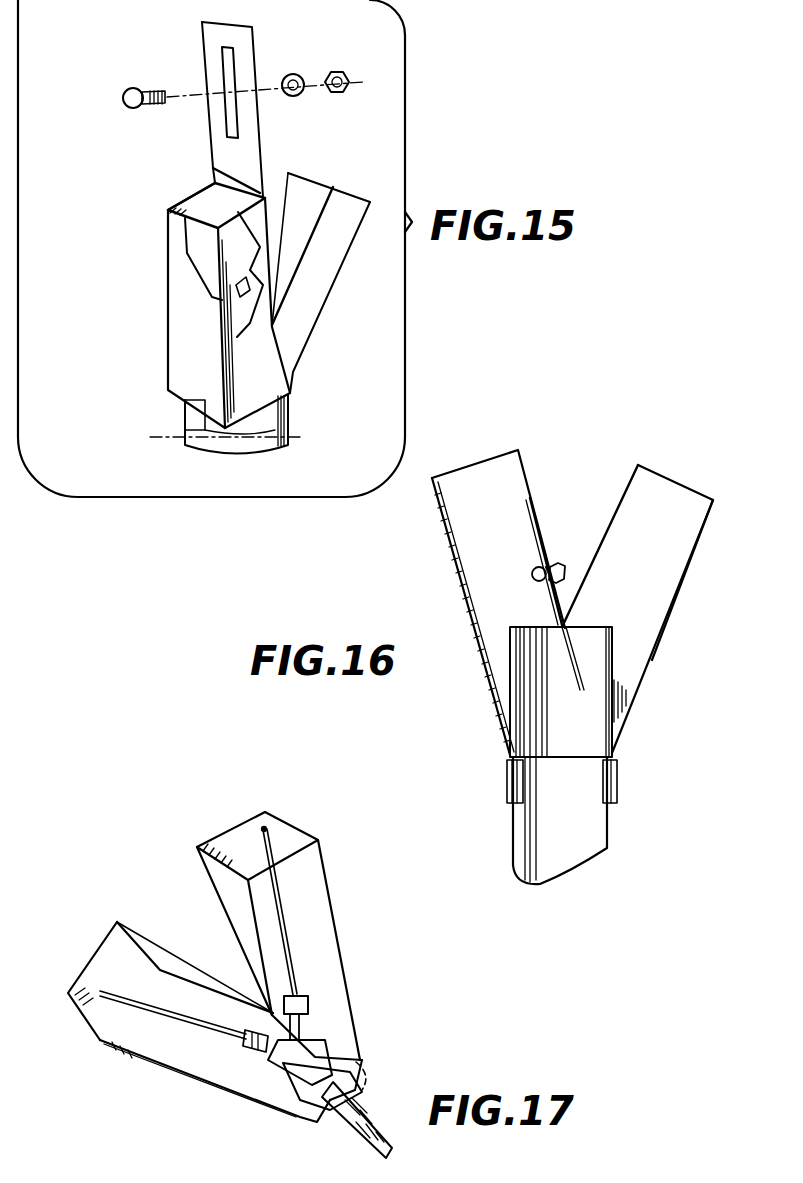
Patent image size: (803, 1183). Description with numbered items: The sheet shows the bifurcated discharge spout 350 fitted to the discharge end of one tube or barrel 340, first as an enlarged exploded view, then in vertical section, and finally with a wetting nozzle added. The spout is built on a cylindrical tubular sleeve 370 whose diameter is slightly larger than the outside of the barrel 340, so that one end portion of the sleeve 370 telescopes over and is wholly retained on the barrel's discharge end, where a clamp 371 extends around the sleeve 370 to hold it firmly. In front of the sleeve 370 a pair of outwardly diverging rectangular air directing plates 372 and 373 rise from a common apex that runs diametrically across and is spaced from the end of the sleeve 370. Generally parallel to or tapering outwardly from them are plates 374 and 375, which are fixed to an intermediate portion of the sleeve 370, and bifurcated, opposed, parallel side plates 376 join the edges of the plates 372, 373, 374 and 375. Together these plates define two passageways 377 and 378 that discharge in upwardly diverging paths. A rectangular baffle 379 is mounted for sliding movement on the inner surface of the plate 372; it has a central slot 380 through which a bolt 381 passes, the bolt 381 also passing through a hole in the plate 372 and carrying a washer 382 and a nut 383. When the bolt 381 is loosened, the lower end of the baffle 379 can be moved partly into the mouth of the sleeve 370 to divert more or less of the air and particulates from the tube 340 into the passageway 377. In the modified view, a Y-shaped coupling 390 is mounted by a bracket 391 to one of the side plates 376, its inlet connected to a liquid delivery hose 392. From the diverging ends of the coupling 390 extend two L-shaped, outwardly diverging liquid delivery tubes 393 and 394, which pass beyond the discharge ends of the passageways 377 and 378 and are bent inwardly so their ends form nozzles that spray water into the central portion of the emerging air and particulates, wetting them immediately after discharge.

In FIG. 16, the tube or barrel 340 is at (612, 843).
In FIG. 15, the discharge spout 350 is at (160, 292).
In FIG. 16, the discharge spout 350 is at (498, 737).
In FIG. 17, the discharge spout 350 is at (360, 1010).
In FIG. 15, the cylindrical tubular sleeve 370 is at (293, 430).
In FIG. 16, the cylindrical tubular sleeve 370 is at (594, 737).
In FIG. 15, the clamp 371 is at (190, 426).
In FIG. 16, the clamp 371 is at (614, 790).
In FIG. 17, the clamp 371 is at (362, 1087).
In FIG. 15, the air directing plate 372 is at (228, 300).
In FIG. 16, the air directing plate 372 is at (532, 507).
In FIG. 17, the air directing plate 372 is at (133, 932).
In FIG. 15, the air directing plate 373 is at (314, 224).
In FIG. 16, the air directing plate 373 is at (628, 478).
In FIG. 17, the air directing plate 373 is at (210, 885).
In FIG. 15, the plate 374 is at (170, 238).
In FIG. 16, the plate 374 is at (463, 592).
In FIG. 17, the plate 374 is at (98, 1023).
In FIG. 16, the plate 375 is at (672, 618).
In FIG. 17, the plate 375 is at (283, 825).
In FIG. 15, the side plate 376 is at (297, 370).
In FIG. 16, the side plate 376 is at (460, 540).
In FIG. 17, the side plate 376 is at (97, 955).
In FIG. 15, the passageway 377 is at (177, 202).
In FIG. 16, the passageway 377 is at (497, 468).
In FIG. 15, the passageway 378 is at (307, 177).
In FIG. 16, the passageway 378 is at (673, 497).
In FIG. 17, the passageway 378 is at (235, 835).
In FIG. 15, the rectangular baffle 379 is at (250, 53).
In FIG. 15, the central slot 380 is at (212, 152).
In FIG. 16, the central slot 380 is at (575, 632).
In FIG. 15, the bolt 381 is at (123, 96).
In FIG. 16, the bolt 381 is at (535, 578).
In FIG. 15, the washer 382 is at (286, 96).
In FIG. 16, the washer 382 is at (547, 566).
In FIG. 15, the nut 383 is at (333, 73).
In FIG. 16, the nut 383 is at (556, 565).
In FIG. 17, the Y-shaped coupling 390 is at (247, 1077).
In FIG. 17, the bracket 391 is at (360, 1058).
In FIG. 17, the liquid delivery hose 392 is at (354, 1138).
In FIG. 17, the liquid delivery tube 393 is at (160, 1010).
In FIG. 17, the liquid delivery tube 394 is at (295, 993).